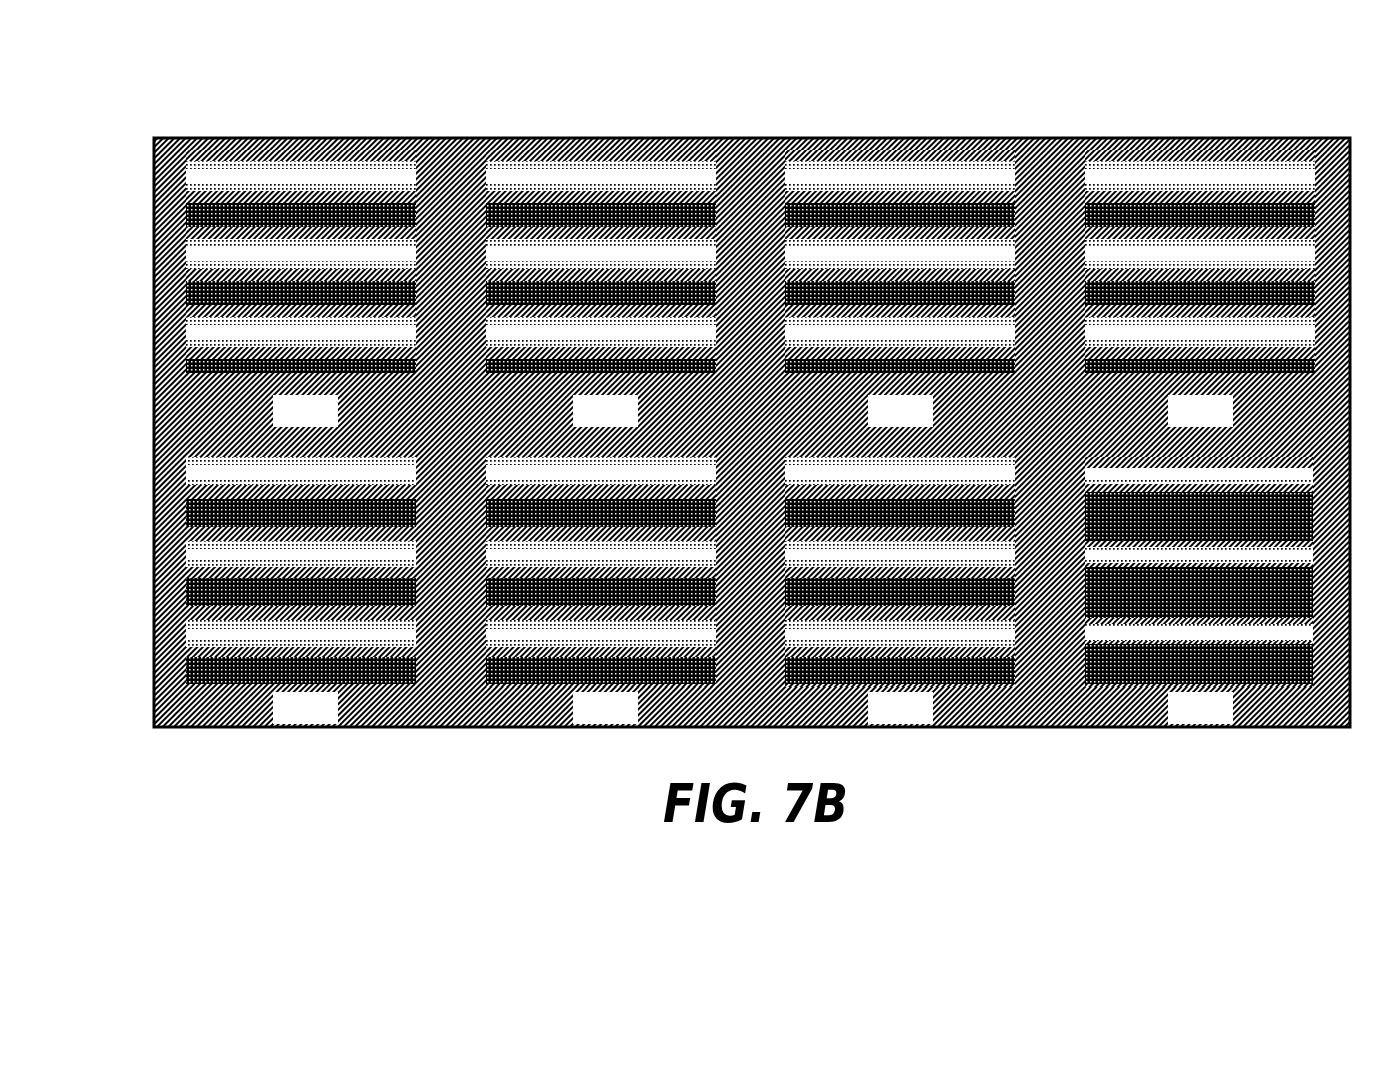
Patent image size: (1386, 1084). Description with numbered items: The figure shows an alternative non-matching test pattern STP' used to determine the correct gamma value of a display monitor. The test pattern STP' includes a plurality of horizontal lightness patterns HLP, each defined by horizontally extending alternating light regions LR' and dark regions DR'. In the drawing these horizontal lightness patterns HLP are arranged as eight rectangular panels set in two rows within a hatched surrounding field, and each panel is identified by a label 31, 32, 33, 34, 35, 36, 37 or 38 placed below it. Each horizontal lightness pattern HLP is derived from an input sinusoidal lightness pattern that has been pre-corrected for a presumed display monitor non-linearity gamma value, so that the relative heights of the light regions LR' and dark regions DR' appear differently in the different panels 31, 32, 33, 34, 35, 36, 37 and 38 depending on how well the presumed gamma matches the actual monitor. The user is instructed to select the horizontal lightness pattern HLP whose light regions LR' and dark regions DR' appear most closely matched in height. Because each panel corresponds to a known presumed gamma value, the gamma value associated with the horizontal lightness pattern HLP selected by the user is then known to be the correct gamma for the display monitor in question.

The non-matching test pattern STP' is at (709, 380).
The horizontal lightness pattern HLP is at (813, 135).
The light region LR' is at (254, 511).
The dark region DR' is at (254, 590).
The test pattern patch 31 is at (301, 288).
The test pattern patch 32 is at (601, 288).
The test pattern patch 33 is at (900, 288).
The test pattern patch 34 is at (1200, 288).
The test pattern patch 35 is at (254, 550).
The test pattern patch 36 is at (601, 590).
The test pattern patch 37 is at (900, 590).
The test pattern patch 38 is at (1199, 590).